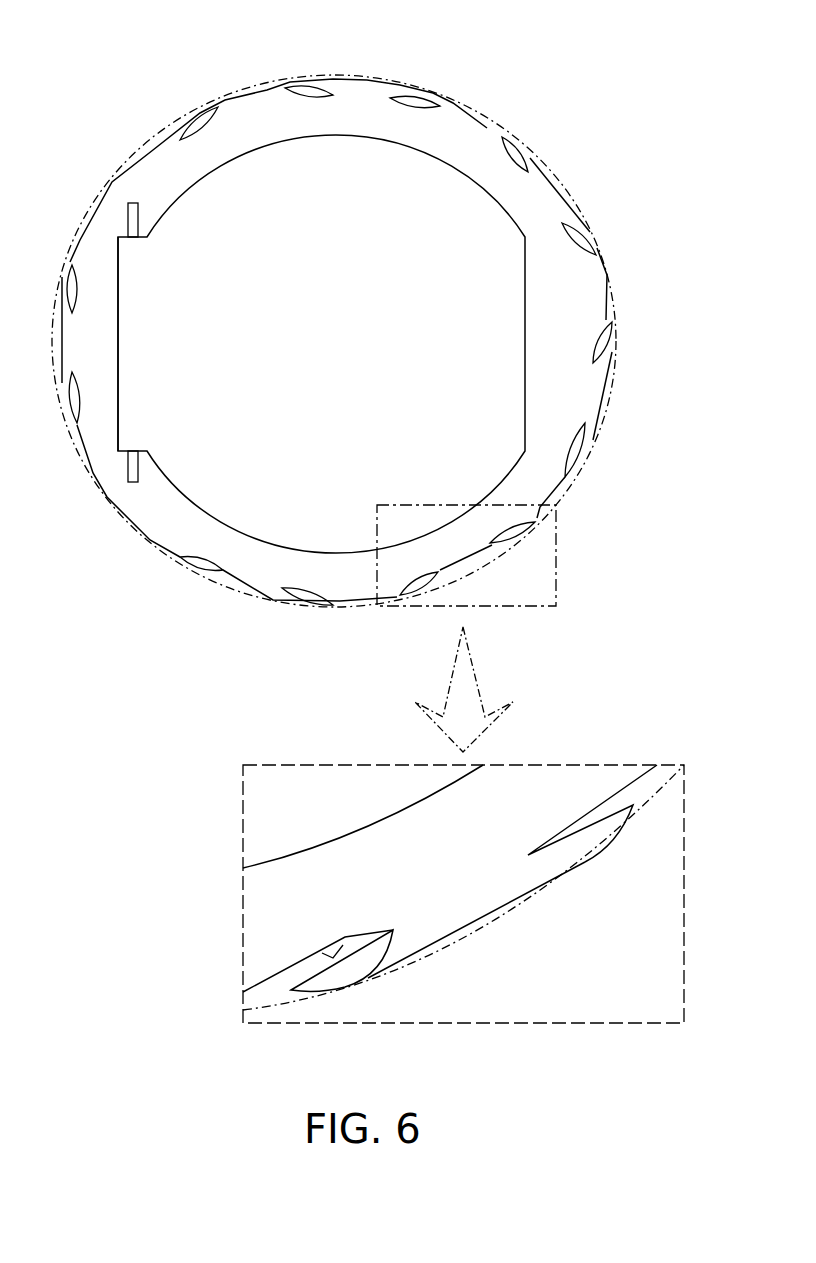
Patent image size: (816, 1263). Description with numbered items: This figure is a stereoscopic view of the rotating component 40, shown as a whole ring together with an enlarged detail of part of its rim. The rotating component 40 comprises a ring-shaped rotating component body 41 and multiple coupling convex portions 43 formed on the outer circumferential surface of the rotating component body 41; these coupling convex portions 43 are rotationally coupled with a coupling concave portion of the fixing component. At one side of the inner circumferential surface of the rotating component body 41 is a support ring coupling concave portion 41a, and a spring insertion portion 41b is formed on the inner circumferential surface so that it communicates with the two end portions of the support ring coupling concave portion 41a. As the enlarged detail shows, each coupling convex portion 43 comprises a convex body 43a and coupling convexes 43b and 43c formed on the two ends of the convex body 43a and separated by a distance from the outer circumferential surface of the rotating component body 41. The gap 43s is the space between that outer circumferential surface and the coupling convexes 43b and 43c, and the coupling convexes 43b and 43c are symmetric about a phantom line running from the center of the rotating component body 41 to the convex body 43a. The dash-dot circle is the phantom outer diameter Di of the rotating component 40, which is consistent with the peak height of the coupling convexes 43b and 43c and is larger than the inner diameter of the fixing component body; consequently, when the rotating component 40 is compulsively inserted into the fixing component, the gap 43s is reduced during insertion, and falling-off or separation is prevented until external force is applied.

The rotating component 40 is at (125, 82).
The rotating component body 41 is at (142, 511).
The support ring coupling concave portion 41a is at (120, 347).
The spring insertion portion 41b is at (137, 233).
The coupling convex portion 43 is at (597, 441).
The convex body 43a is at (473, 893).
The coupling convex 43b is at (353, 978).
The coupling convex 43c is at (587, 853).
The gap 43s is at (343, 937).
The phantom outer diameter Di is at (258, 600).